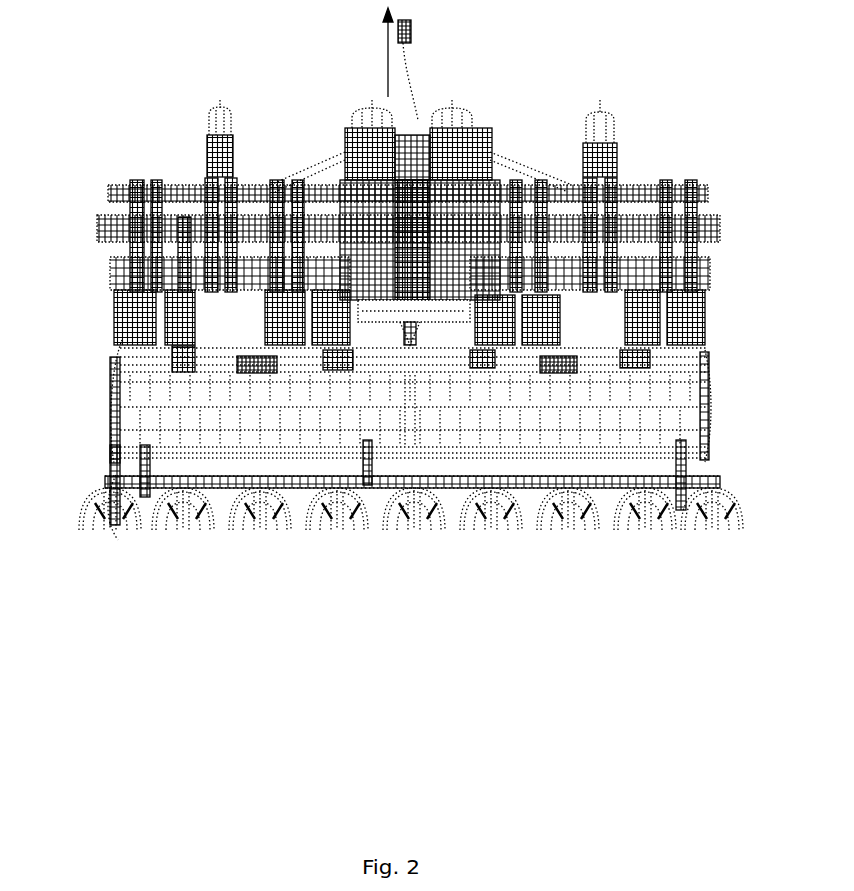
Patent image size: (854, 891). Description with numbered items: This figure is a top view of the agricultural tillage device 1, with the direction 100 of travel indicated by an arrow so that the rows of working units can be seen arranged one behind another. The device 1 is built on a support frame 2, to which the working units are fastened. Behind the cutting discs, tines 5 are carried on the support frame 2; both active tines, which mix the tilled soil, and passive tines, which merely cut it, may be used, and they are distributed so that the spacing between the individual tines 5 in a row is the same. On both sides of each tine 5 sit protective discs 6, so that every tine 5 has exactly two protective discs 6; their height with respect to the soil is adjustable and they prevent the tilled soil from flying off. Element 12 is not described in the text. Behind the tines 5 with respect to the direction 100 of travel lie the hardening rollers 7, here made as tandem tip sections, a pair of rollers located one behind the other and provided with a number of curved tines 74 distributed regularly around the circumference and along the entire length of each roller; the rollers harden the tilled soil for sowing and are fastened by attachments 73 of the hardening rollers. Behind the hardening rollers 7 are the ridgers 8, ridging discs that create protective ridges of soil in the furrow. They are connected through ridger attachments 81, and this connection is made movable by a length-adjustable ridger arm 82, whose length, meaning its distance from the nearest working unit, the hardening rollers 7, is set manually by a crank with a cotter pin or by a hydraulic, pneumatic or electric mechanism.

The agricultural tillage device 1 is at (477, 92).
The support frame 2 is at (335, 235).
The tines 5 is at (190, 305).
The protective discs 6 is at (127, 320).
The coulter holder 12 is at (145, 285).
The hardening rollers 7 is at (125, 412).
The attachments of the hardening rollers 73 is at (112, 415).
The curved tines 74 is at (125, 340).
The ridgers 8 is at (215, 532).
The ridger attachments 81 is at (118, 510).
The length-adjustable ridger arm 82 is at (367, 480).
The direction of travel 100 is at (387, 64).